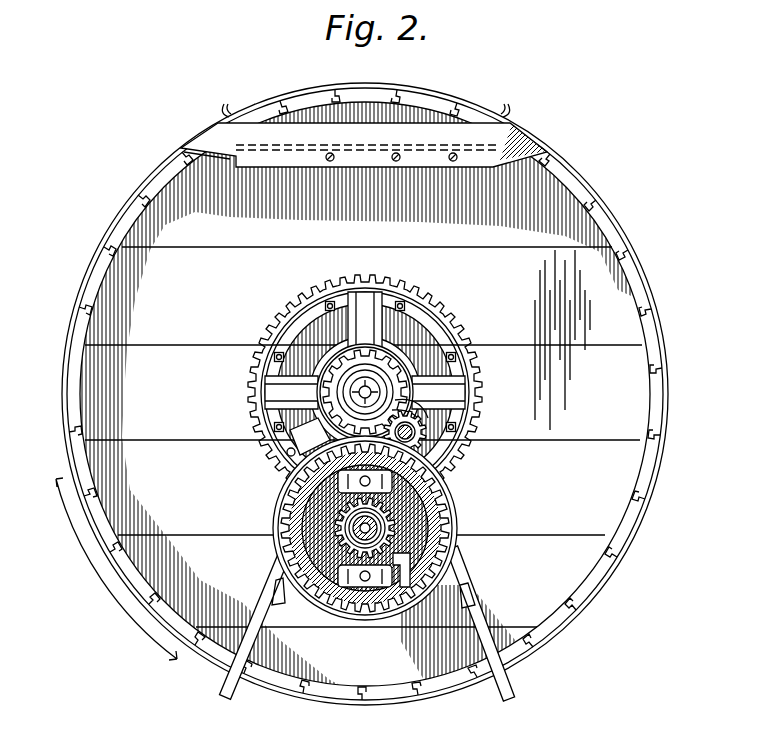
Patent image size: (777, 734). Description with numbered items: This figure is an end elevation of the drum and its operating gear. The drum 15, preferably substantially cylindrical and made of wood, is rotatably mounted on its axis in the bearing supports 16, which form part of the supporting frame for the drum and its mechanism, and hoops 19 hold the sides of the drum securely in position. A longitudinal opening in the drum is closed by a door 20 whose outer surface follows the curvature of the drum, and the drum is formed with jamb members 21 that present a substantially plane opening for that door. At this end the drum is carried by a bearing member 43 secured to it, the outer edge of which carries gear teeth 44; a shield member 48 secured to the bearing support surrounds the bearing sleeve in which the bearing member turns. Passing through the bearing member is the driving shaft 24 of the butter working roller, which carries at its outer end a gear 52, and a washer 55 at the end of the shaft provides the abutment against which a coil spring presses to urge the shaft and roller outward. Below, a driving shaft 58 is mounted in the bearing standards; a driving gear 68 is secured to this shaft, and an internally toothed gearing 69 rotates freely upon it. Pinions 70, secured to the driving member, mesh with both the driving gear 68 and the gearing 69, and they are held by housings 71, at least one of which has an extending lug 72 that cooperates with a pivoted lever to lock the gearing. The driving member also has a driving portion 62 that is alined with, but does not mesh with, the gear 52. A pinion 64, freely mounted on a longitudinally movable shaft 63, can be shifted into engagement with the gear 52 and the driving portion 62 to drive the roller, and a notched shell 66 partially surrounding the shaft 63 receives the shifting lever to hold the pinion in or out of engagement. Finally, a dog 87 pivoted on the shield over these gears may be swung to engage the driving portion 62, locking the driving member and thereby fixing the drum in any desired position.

The drum 15 is at (635, 290).
The bearing supports 16 is at (218, 690).
The hoops 19 is at (665, 458).
The door 20 is at (408, 100).
The jamb members 21 is at (214, 142).
The driving shaft 24 is at (378, 390).
The bearing member 43 is at (372, 338).
The gear teeth 44 is at (375, 278).
The shield member 48 is at (345, 355).
The gear 52 is at (305, 352).
The washer 55 is at (350, 382).
The driving shaft 58 is at (392, 524).
The driving portion 62 is at (284, 505).
The shaft 63 is at (456, 430).
The pinion 64 is at (424, 424).
The shell 66 is at (428, 405).
The driving gear 68 is at (383, 527).
The internally toothed gearing 69 is at (290, 533).
The pinions 70 is at (395, 484).
The housings 71 is at (340, 592).
The lug 72 is at (420, 590).
The dog 87 is at (275, 443).